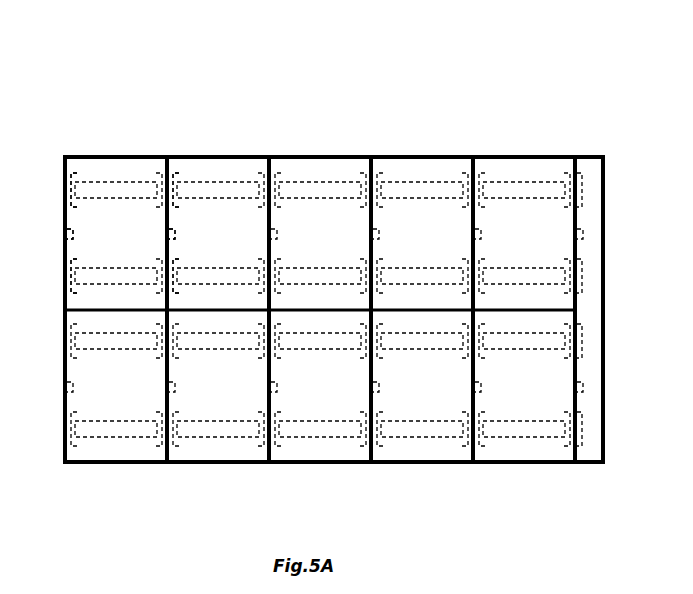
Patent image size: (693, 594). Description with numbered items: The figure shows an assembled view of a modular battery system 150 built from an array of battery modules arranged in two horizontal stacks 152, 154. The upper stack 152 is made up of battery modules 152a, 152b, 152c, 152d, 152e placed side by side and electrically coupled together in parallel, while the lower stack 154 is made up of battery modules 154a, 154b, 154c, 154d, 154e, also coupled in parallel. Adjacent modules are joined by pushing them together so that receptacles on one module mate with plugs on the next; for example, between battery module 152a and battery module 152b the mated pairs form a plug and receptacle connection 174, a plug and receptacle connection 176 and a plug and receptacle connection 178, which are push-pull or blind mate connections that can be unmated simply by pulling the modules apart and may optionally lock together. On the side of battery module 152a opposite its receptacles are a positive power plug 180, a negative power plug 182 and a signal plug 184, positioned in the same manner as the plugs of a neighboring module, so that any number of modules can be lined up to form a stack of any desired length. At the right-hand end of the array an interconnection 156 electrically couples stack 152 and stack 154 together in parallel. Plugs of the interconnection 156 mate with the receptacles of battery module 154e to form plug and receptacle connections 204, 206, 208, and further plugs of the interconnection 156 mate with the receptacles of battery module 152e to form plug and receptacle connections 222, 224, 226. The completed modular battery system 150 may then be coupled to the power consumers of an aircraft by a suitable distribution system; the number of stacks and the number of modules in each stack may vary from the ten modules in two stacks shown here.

The modular battery system 150 is at (482, 79).
The stack 152 is at (550, 157).
The battery module 152a is at (118, 157).
The battery module 152b is at (217, 157).
The battery module 152c is at (319, 157).
The battery module 152d is at (419, 157).
The battery module 152e is at (509, 157).
The stack 154 is at (548, 463).
The battery module 154a is at (125, 462).
The battery module 154b is at (226, 462).
The battery module 154c is at (326, 462).
The battery module 154d is at (427, 462).
The battery module 154e is at (526, 462).
The interconnection 156 is at (588, 157).
The plug and receptacle connection 174 is at (175, 264).
The plug and receptacle connection 176 is at (180, 171).
The plug and receptacle connection 178 is at (176, 236).
The positive power plug 180 is at (65, 280).
The negative power plug 182 is at (65, 188).
The signal plug 184 is at (67, 233).
The plug and receptacle connection 204 is at (584, 431).
The plug and receptacle connection 206 is at (584, 343).
The plug and receptacle connection 208 is at (584, 387).
The plug and receptacle connection 222 is at (584, 279).
The plug and receptacle connection 224 is at (584, 191).
The plug and receptacle connection 226 is at (584, 235).